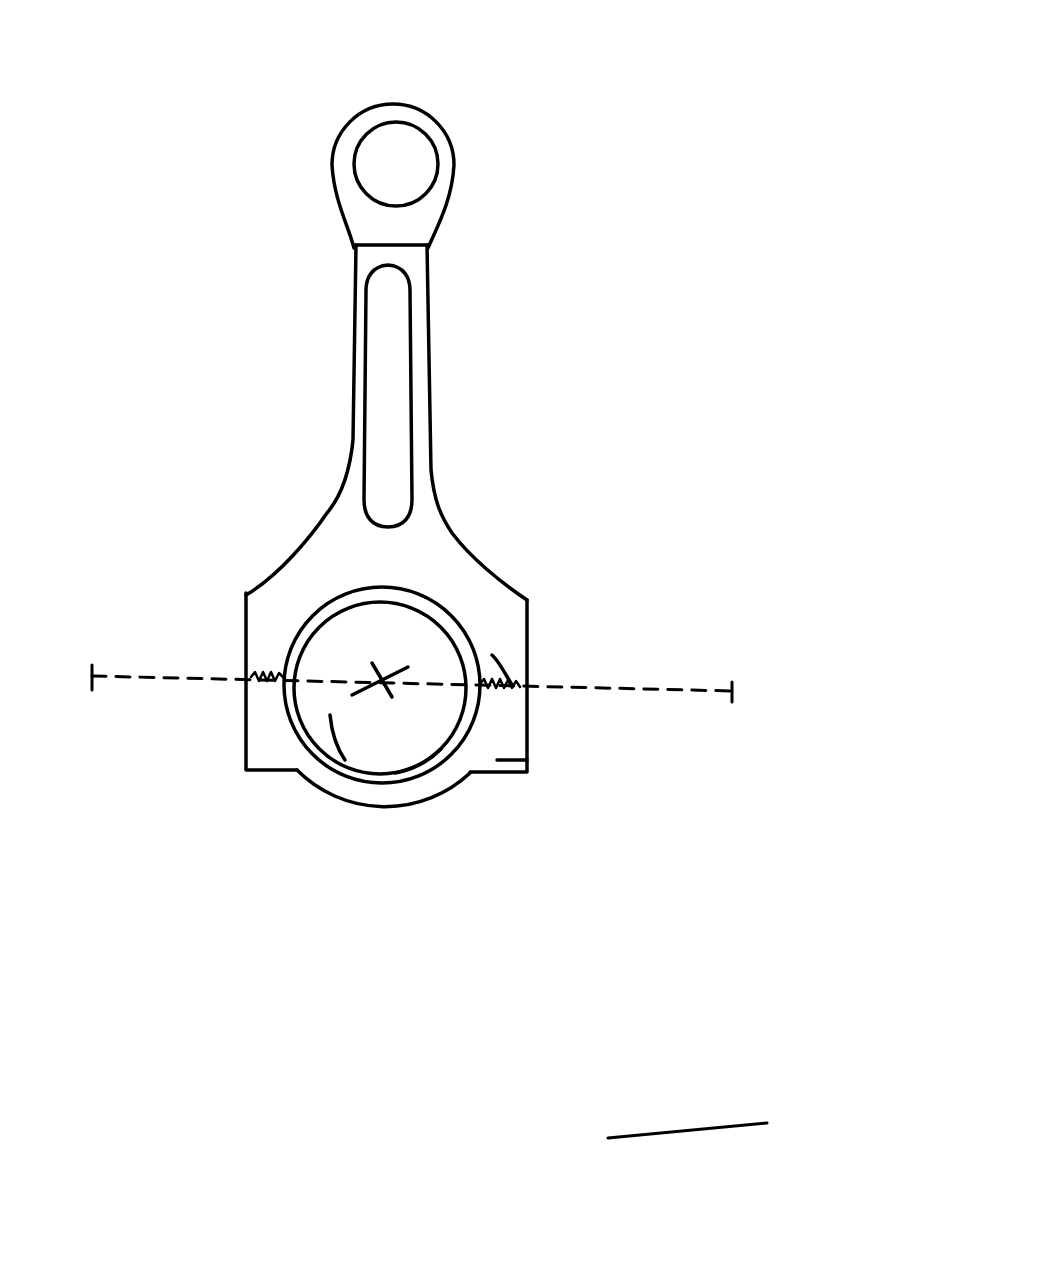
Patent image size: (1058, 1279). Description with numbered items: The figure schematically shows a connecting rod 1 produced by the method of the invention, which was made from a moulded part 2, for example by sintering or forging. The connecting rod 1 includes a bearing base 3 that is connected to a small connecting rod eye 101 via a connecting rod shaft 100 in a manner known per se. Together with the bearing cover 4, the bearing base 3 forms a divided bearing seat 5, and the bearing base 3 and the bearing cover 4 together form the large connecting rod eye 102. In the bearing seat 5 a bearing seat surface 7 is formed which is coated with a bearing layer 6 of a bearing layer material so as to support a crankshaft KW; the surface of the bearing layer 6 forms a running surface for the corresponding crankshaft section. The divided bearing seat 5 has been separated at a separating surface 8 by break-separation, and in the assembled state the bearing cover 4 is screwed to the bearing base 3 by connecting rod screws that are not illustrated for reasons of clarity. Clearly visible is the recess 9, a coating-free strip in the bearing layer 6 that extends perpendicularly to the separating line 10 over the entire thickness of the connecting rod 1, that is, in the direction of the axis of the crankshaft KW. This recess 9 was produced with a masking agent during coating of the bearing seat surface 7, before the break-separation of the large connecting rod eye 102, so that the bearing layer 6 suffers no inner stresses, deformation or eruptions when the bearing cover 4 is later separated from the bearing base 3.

The connecting rod 1 is at (503, 86).
The moulded part 2 is at (421, 422).
The bearing base 3 is at (463, 587).
The bearing cover 4 is at (527, 770).
The divided bearing seat 5 is at (353, 762).
The bearing layer 6 is at (420, 762).
The bearing seat surface 7 is at (343, 760).
The separating surface 8 is at (507, 683).
The recess 9 is at (287, 680).
The separating line 10 is at (675, 688).
The connecting rod shaft 100 is at (418, 296).
The small connecting rod eye 101 is at (445, 165).
The large connecting rod eye 102 is at (447, 707).
The crankshaft KW is at (383, 681).